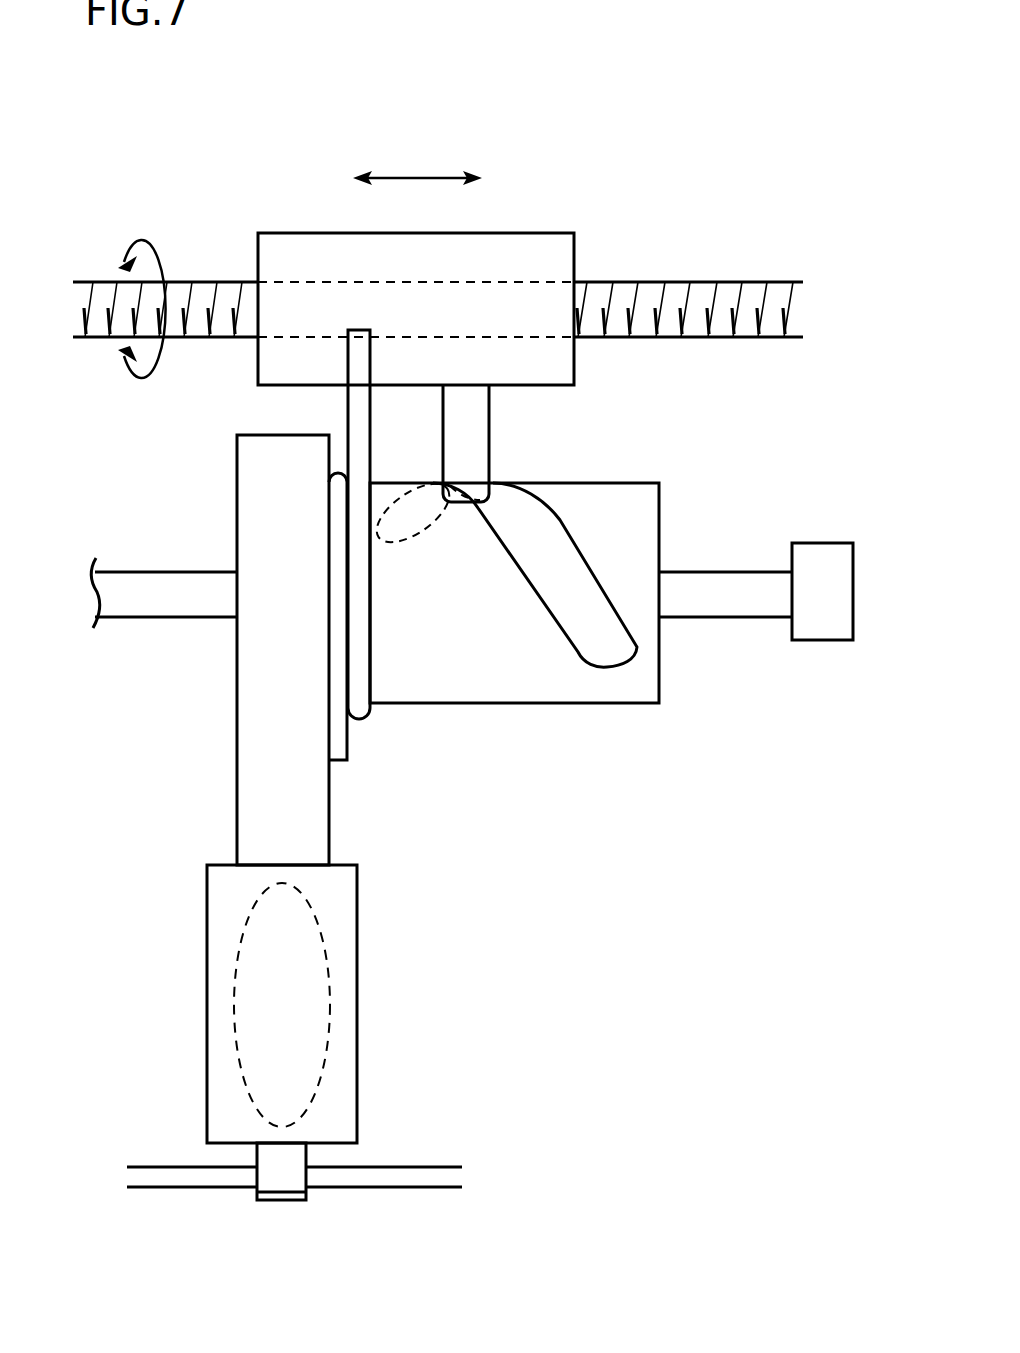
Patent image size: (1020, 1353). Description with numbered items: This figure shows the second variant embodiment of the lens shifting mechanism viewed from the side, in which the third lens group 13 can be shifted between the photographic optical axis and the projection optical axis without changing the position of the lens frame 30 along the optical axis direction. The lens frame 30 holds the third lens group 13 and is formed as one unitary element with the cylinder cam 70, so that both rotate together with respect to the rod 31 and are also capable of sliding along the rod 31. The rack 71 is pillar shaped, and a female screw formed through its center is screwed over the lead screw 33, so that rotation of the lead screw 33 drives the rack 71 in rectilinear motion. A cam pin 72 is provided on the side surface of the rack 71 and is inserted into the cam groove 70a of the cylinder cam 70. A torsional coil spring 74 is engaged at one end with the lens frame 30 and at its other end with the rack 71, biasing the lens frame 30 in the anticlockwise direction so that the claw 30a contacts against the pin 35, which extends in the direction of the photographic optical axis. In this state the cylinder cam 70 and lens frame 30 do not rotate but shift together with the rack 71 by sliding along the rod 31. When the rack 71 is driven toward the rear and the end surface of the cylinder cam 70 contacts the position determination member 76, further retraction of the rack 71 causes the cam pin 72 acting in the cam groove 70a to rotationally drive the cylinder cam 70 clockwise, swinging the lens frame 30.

The third lens group 13 is at (330, 995).
The lens frame 30 is at (270, 792).
The claw 30a is at (280, 1200).
The rod 31 is at (165, 597).
The lead screw 33 is at (725, 290).
The pin 35 is at (423, 1178).
The cylinder cam 70 is at (488, 672).
The cam groove 70a is at (597, 635).
The rack 71 is at (542, 252).
The cam pin 72 is at (470, 428).
The torsional coil spring 74 is at (338, 735).
The position determination member 76 is at (827, 617).